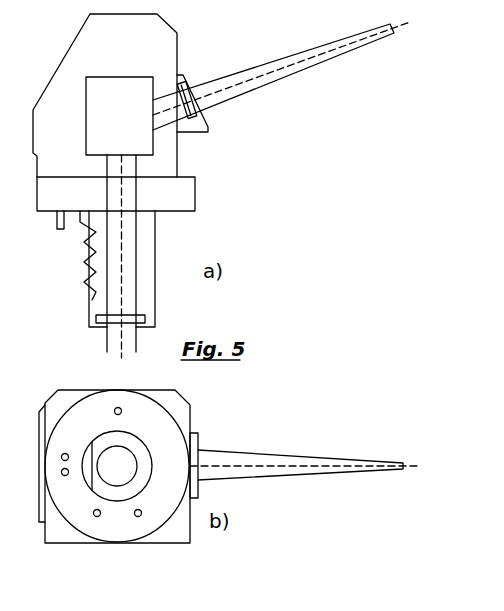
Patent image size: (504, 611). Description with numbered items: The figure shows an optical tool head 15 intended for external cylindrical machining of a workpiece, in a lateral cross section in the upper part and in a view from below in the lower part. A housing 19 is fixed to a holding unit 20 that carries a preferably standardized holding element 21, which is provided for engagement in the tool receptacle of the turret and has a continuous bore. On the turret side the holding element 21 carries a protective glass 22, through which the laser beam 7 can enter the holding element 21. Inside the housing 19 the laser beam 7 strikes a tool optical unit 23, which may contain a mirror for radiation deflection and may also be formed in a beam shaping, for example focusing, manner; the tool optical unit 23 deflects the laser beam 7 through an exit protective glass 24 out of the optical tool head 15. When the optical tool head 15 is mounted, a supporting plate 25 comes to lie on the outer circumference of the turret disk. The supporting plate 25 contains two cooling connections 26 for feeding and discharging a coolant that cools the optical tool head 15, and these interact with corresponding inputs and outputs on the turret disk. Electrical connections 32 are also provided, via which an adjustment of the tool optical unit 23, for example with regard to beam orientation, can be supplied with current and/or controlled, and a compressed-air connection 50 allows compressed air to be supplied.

The laser beam 7 is at (265, 80).
The optical tool head 15 is at (168, 160).
The housing 19 is at (158, 57).
The holding unit 20 is at (165, 243).
The holding element 21 is at (150, 277).
The protective glass 22 is at (114, 318).
The tool optical unit 23 is at (106, 105).
The exit protective glass 24 is at (198, 104).
The supporting plate 25 is at (182, 200).
The cooling connections 26 is at (138, 517).
The electrical connections 32 is at (57, 229).
The compressed-air connection 50 is at (117, 407).